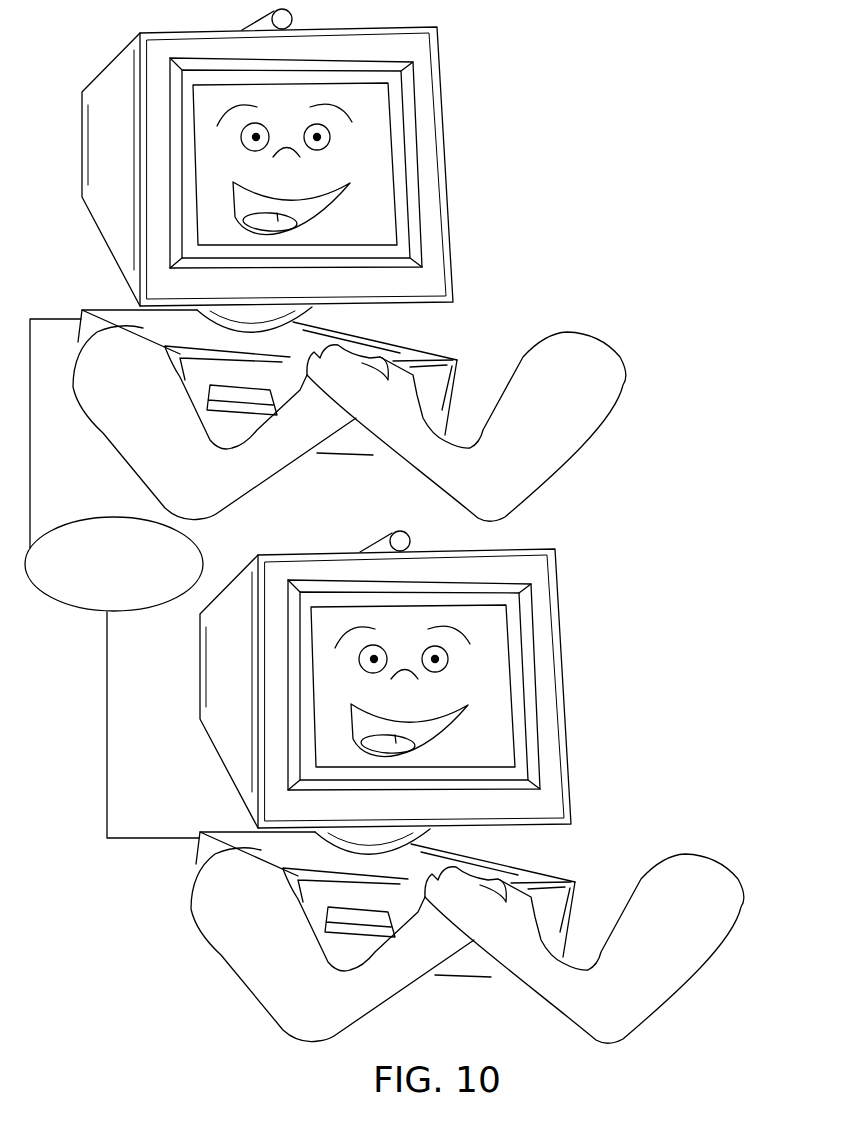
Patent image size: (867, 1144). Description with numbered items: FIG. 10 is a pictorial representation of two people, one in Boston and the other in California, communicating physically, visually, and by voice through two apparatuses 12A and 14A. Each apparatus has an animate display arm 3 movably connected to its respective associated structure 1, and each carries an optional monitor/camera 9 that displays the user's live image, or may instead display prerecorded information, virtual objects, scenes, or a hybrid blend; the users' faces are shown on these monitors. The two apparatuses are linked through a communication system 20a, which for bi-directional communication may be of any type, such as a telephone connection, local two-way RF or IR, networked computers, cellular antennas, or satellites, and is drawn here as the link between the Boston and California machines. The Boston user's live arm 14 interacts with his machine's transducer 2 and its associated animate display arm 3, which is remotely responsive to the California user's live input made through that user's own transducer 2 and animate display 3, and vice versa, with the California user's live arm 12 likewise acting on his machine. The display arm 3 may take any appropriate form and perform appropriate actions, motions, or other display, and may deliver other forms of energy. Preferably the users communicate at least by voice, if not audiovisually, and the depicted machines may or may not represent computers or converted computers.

The structure 1 is at (388, 526).
The monitor/camera 9 is at (118, 274).
The California user's live arm 12 is at (367, 127).
The Boston user's live arm 14 is at (577, 457).
The apparatus 14A is at (457, 360).
The apparatus 12A is at (575, 882).
The transducer 2 is at (264, 684).
The animate display arm 3 is at (123, 465).
The communication system 20a is at (114, 578).